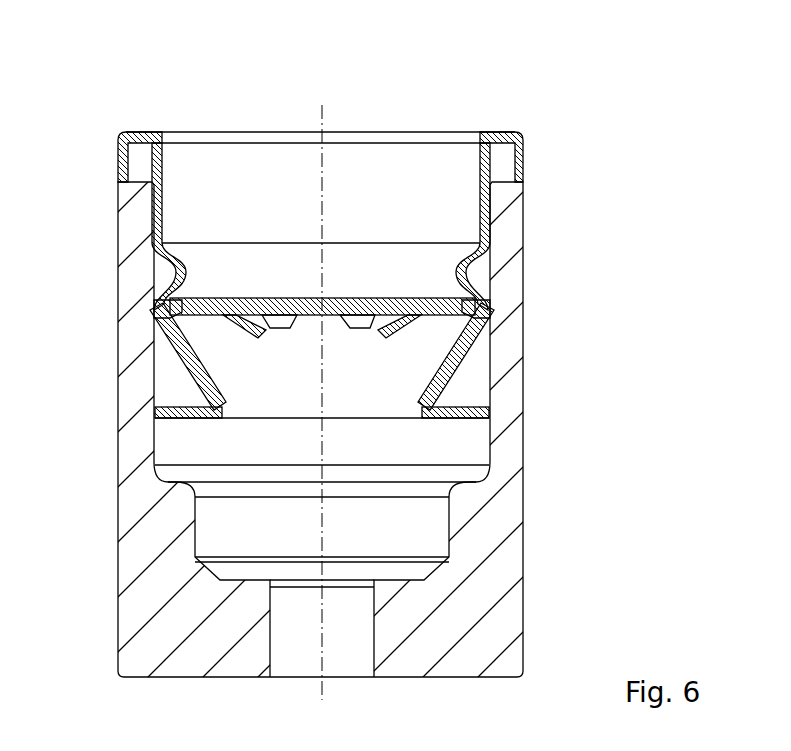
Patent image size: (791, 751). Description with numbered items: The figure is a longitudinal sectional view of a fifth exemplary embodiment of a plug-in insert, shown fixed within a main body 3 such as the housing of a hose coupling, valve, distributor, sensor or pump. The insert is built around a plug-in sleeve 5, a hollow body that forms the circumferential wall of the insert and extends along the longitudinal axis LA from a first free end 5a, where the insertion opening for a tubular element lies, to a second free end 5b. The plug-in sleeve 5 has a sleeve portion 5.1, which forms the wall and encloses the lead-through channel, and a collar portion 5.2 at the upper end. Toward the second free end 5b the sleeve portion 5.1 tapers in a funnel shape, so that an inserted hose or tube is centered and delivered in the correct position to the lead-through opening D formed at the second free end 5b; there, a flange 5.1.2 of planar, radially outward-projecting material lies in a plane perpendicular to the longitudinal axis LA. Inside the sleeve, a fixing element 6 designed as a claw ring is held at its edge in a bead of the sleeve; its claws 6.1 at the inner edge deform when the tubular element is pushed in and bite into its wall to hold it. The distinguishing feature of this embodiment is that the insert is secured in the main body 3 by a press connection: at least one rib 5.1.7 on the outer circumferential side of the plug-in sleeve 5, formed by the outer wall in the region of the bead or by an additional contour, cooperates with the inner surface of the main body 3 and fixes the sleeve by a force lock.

The first free end 5a is at (136, 100).
The plug-in sleeve 5 is at (106, 157).
The collar portion 5.2 is at (528, 158).
The fixing element 6 is at (387, 342).
The sleeve portion 5.1 is at (333, 296).
The rib 5.1.7 is at (490, 319).
The claws 6.1 is at (365, 320).
The flange 5.1.2 is at (170, 425).
The lead-through opening D is at (270, 422).
The second free end 5b is at (453, 447).
The main body 3 is at (132, 594).
The longitudinal axis LA is at (320, 697).